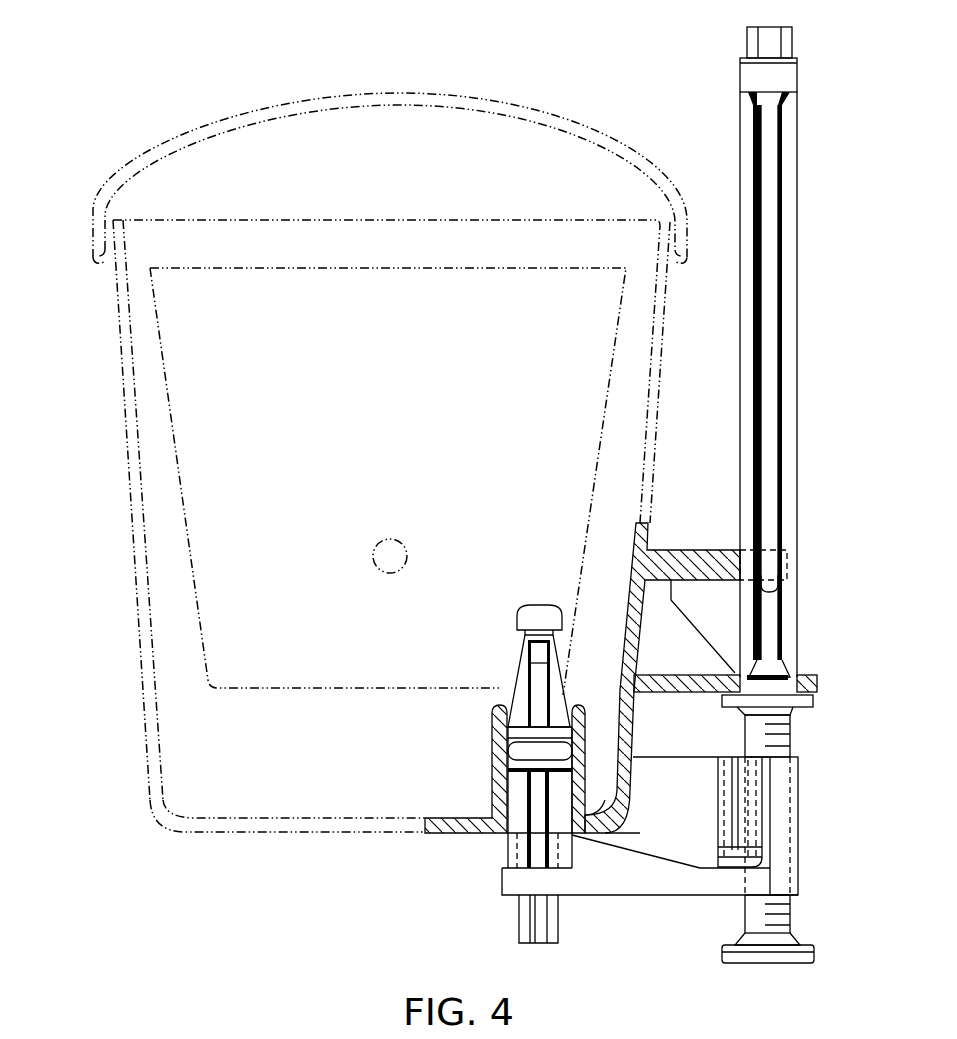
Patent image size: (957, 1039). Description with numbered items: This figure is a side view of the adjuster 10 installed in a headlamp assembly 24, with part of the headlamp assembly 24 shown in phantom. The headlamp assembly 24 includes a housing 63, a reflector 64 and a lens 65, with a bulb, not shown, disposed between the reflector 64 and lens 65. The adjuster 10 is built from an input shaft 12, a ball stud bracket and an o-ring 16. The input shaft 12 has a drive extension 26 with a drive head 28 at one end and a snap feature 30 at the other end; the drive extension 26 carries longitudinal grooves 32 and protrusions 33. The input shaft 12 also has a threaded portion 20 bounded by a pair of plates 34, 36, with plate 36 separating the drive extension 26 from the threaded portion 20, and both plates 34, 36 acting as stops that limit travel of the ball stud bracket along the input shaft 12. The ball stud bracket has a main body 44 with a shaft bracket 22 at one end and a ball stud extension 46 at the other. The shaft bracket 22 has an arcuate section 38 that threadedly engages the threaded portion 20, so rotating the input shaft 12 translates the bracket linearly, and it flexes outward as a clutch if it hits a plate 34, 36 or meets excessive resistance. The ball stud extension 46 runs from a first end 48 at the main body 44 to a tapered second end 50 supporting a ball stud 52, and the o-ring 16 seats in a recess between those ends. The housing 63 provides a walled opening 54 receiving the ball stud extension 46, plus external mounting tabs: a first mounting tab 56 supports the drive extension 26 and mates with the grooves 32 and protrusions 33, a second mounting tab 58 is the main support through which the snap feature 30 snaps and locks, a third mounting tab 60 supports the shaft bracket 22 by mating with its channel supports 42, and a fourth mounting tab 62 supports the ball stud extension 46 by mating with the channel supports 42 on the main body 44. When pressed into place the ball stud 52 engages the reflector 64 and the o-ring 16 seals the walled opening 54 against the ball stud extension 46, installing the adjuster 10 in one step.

The adjuster 10 is at (852, 685).
The input shaft 12 is at (818, 278).
The o-ring 16 is at (522, 750).
The threaded portion 20 is at (775, 736).
The shaft bracket 22 is at (800, 822).
The headlamp assembly 24 is at (96, 430).
The drive extension 26 is at (797, 155).
The drive head 28 is at (783, 43).
The snap feature 30 is at (775, 622).
The longitudinal grooves 32 is at (748, 382).
The protrusions 33 is at (770, 340).
The plate 34 is at (785, 963).
The plate 36 is at (815, 698).
The arcuate section 38 is at (785, 852).
The channel supports 42 is at (736, 770).
The main body 44 is at (660, 880).
The ball stud extension 46 is at (574, 841).
The first end 48 is at (523, 849).
The tapered second end 50 is at (522, 672).
The ball stud 52 is at (540, 612).
The walled opening 54 is at (508, 705).
The first mounting tab 56 is at (690, 566).
The second mounting tab 58 is at (812, 686).
The third mounting tab 60 is at (690, 822).
The fourth mounting tab 62 is at (530, 917).
The housing 63 is at (112, 317).
The reflector 64 is at (195, 515).
The lens 65 is at (300, 102).